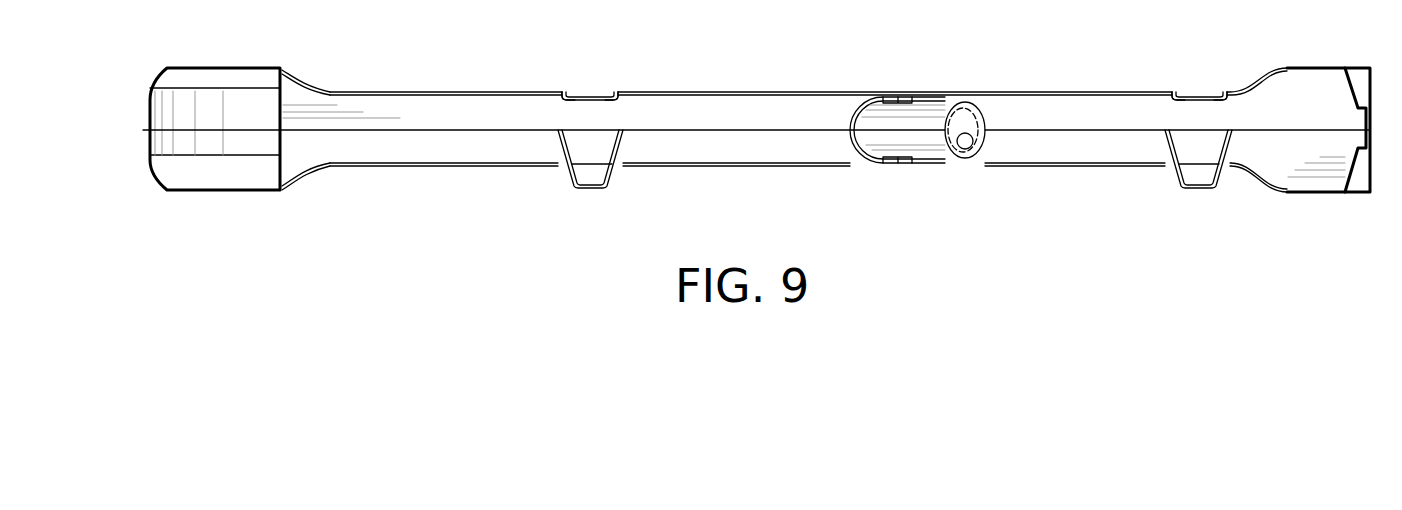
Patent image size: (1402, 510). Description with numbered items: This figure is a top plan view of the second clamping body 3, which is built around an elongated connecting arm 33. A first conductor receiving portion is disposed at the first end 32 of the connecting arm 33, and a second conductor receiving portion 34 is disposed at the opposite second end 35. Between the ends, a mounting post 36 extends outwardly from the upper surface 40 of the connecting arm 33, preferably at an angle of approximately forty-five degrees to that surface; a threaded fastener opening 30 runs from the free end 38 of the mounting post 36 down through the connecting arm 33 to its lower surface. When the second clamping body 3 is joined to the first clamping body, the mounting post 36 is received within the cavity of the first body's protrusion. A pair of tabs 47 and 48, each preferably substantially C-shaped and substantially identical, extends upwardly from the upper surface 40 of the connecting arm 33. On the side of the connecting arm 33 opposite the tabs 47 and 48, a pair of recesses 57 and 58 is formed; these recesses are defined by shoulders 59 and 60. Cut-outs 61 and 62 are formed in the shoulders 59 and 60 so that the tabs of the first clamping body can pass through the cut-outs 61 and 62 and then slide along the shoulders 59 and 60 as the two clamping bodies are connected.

The second clamping body 3 is at (410, 82).
The threaded fastener opening 30 is at (970, 149).
The first end 32 is at (1372, 148).
The connecting arm 33 is at (782, 92).
The second conductor receiving portion 34 is at (150, 130).
The second end 35 is at (300, 96).
The mounting post 36 is at (950, 103).
The free end 38 is at (975, 108).
The upper surface 40 is at (678, 108).
The tab 47 is at (1200, 192).
The tab 48 is at (587, 192).
The recess 57 is at (1212, 92).
The recess 58 is at (573, 92).
The shoulder 59 is at (1197, 92).
The shoulder 60 is at (585, 92).
The cut-out 61 is at (1185, 92).
The cut-out 62 is at (604, 92).